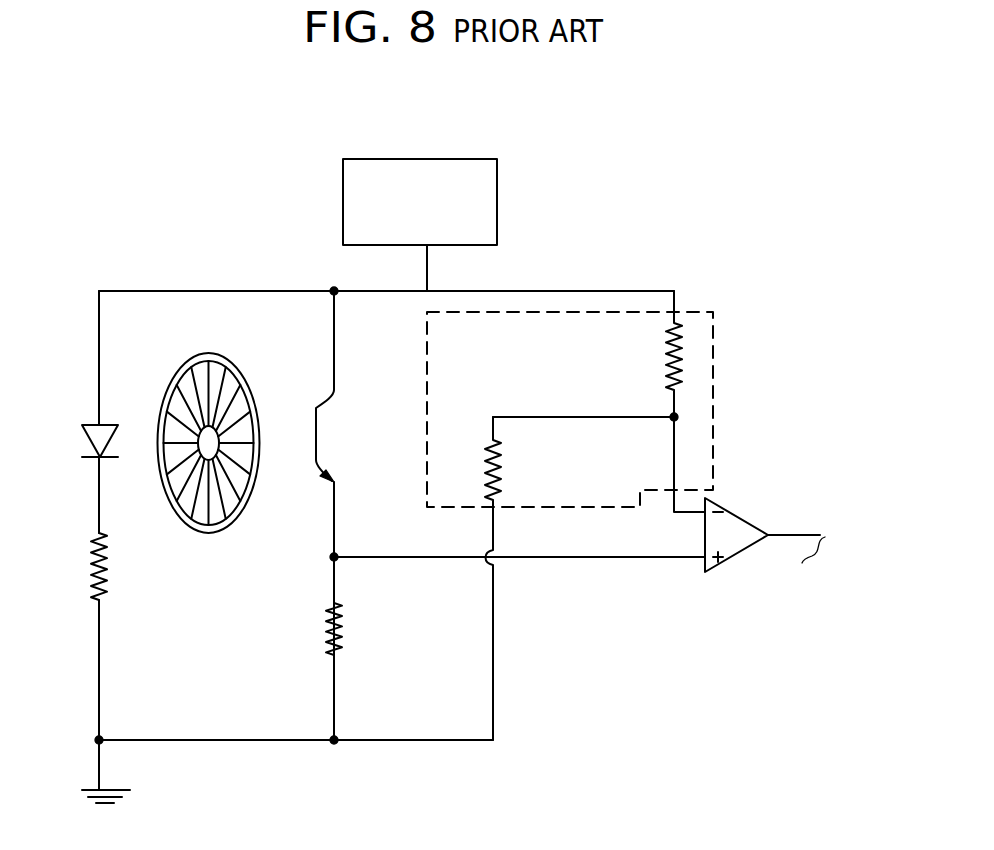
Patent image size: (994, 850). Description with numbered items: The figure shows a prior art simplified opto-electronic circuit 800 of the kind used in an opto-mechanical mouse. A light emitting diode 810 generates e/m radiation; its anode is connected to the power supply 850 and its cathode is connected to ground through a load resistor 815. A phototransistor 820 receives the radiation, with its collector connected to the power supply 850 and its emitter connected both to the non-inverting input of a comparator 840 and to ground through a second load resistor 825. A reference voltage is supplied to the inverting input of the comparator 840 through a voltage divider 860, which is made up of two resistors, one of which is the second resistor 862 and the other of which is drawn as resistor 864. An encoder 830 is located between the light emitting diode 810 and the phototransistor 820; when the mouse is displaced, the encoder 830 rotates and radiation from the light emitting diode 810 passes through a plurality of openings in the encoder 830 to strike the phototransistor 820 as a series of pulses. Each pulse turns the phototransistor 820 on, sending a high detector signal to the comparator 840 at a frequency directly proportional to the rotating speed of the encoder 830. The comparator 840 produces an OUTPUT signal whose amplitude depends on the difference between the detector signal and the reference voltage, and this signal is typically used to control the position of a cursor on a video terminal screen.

The opto-electronic circuit 800 is at (673, 230).
The light emitting diode 810 is at (82, 438).
The load resistor 815 is at (92, 582).
The phototransistor 820 is at (270, 522).
The load resistor 825 is at (342, 647).
The encoder 830 is at (198, 352).
The comparator 840 is at (743, 517).
The power supply 850 is at (497, 190).
The voltage divider 860 is at (713, 420).
The second resistor 862 is at (500, 470).
The divider resistor 864 is at (683, 362).